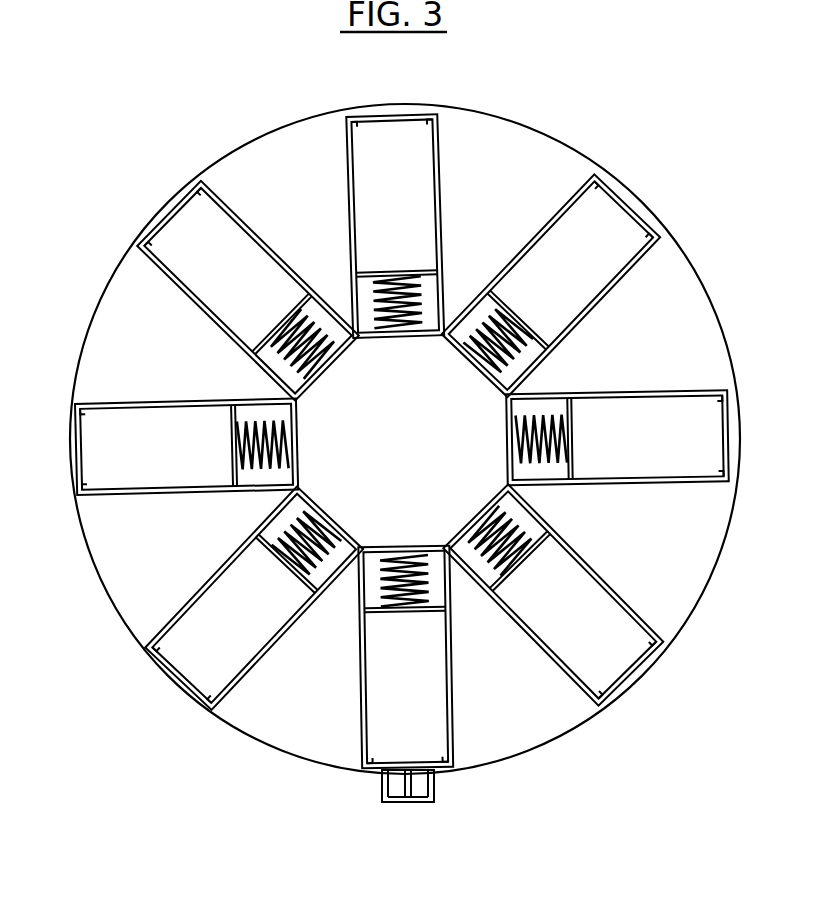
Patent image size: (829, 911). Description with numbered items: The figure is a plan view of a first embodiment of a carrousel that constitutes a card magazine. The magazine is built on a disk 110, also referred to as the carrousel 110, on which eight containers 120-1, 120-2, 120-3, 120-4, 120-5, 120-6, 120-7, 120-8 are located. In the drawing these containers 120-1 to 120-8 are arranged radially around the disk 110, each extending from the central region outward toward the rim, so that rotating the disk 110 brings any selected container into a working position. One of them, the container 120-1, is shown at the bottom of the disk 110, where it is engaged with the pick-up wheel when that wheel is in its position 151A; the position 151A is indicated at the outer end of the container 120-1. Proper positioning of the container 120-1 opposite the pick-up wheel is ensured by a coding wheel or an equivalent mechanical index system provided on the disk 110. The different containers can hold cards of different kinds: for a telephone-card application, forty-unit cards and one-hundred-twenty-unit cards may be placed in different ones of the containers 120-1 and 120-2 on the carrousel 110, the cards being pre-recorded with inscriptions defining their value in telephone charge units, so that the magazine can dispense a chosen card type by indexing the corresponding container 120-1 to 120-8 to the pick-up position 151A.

The disk 110 is at (535, 158).
The container 120-1 is at (380, 737).
The container 120-2 is at (622, 657).
The container 120-3 is at (697, 425).
The container 120-4 is at (617, 238).
The container 120-5 is at (387, 138).
The container 120-6 is at (177, 240).
The container 120-7 is at (95, 445).
The container 120-8 is at (193, 662).
The position of the wheel 151A is at (419, 788).